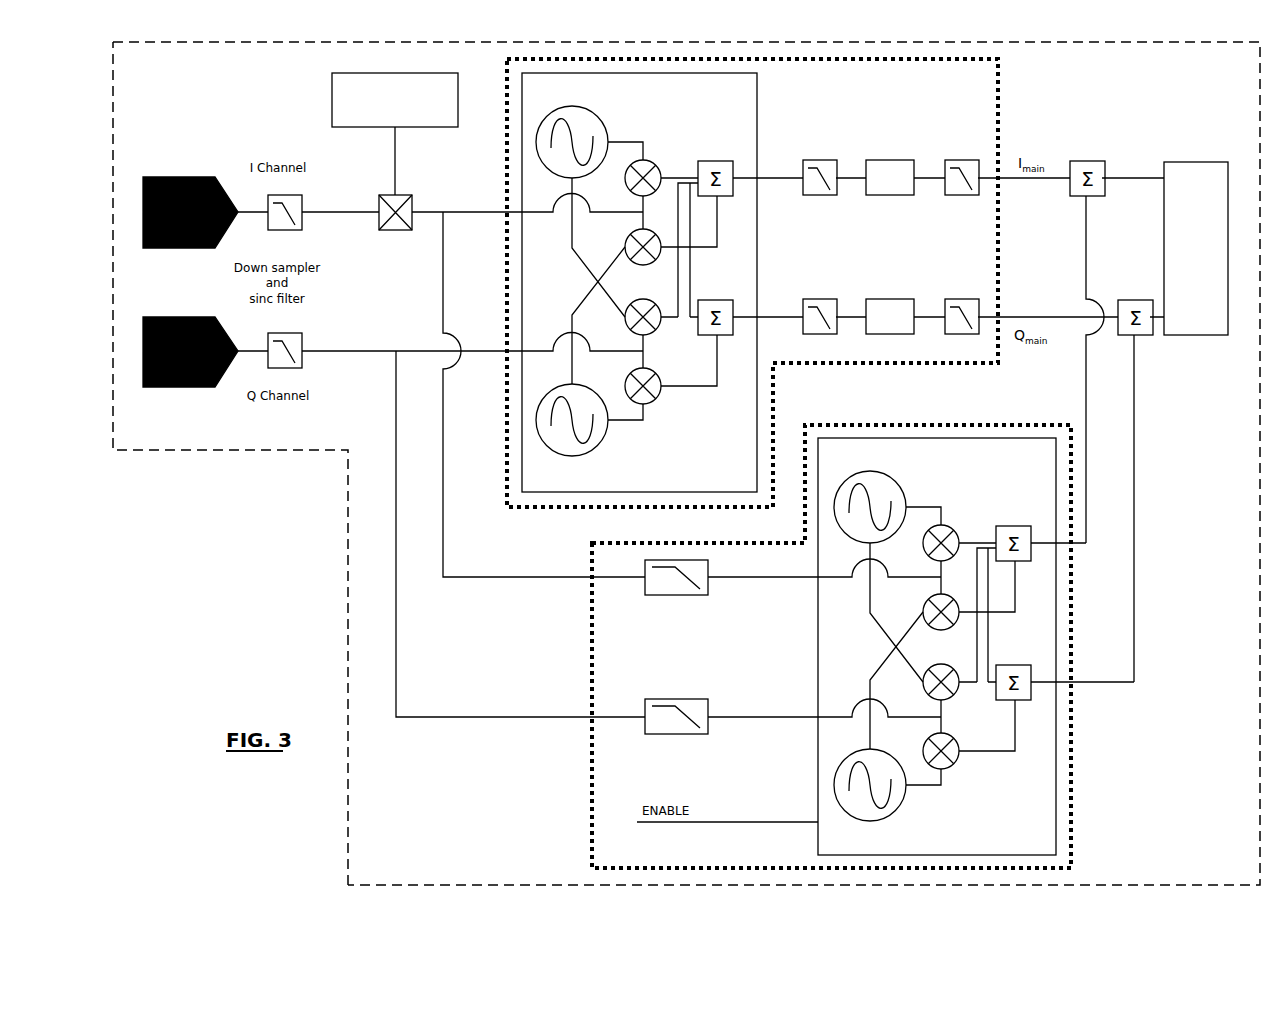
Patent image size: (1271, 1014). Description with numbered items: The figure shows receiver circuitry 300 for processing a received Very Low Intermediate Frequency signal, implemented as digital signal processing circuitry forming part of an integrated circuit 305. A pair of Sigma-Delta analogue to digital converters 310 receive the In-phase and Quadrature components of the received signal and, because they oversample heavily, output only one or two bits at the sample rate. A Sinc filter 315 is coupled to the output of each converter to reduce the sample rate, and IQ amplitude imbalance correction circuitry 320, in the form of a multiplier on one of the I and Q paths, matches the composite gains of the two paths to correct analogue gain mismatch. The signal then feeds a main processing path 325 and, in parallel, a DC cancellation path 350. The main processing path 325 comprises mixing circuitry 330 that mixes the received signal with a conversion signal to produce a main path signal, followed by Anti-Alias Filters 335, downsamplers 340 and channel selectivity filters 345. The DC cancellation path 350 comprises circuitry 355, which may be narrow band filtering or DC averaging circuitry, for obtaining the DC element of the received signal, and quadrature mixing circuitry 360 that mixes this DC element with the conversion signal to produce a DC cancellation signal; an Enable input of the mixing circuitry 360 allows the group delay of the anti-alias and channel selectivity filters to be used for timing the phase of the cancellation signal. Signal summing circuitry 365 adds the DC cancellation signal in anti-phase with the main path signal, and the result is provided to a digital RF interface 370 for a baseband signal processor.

The receiver circuitry 300 is at (1153, 612).
The integrated circuit 305 is at (349, 588).
The Sigma-Delta analogue to digital converters 310 is at (192, 317).
The Sinc filter 315 is at (305, 233).
The IQ amplitude imbalance correction circuitry 320 is at (414, 184).
The main processing path 325 is at (1002, 123).
The mixing circuitry 330 is at (759, 115).
The Anti-Alias Filters 335 is at (821, 157).
The downsamplers 340 is at (887, 157).
The channel selectivity filters 345 is at (962, 158).
The DC cancellation path 350 is at (1073, 749).
The circuitry for obtaining the DC element 355 is at (712, 587).
The quadrature mixing circuitry 360 is at (817, 641).
The signal summing circuitry 365 is at (1104, 161).
The digital RF interface 370 is at (1198, 160).